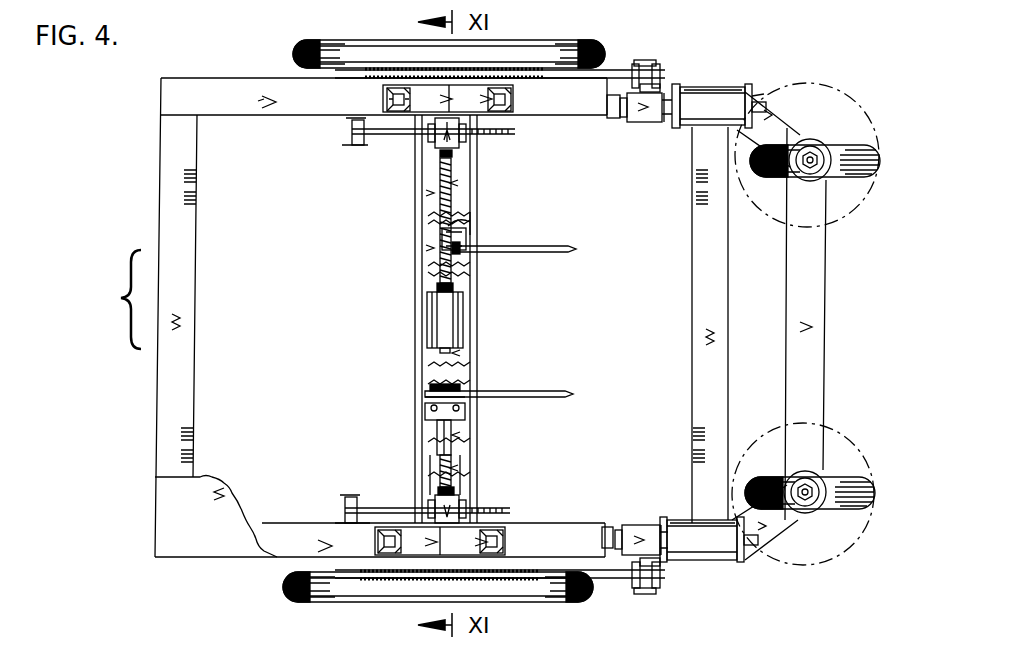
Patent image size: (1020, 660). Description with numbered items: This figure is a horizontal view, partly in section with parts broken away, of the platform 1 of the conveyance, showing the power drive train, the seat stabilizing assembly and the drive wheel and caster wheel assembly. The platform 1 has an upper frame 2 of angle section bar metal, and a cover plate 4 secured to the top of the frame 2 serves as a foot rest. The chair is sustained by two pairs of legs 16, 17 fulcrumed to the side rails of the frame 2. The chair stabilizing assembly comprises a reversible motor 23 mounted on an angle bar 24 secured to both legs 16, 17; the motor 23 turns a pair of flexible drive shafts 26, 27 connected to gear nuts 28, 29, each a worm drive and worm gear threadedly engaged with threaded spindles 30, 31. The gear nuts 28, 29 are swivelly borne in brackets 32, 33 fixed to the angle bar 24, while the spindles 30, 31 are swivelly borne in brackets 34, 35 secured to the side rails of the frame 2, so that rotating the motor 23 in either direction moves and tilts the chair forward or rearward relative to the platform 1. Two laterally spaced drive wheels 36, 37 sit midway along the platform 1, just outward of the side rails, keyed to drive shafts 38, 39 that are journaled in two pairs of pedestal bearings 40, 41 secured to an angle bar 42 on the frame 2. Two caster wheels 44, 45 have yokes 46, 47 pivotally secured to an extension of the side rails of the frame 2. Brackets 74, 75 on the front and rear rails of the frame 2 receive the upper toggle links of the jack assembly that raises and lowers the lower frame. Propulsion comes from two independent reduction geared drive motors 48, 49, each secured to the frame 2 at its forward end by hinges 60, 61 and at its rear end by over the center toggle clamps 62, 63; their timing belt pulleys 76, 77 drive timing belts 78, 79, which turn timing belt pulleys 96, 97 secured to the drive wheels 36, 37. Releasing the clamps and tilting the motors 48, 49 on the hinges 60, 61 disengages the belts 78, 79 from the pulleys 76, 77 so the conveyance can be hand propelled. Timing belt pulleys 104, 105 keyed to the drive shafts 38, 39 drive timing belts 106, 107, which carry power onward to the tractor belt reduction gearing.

The platform 1 is at (120, 299).
The upper frame 2 is at (162, 404).
The cover plate 4 is at (168, 512).
The chair sustaining leg 16 is at (474, 532).
The chair sustaining leg 17 is at (486, 115).
The reversible motor 23 is at (436, 324).
The angle bar 24 is at (428, 455).
The flexible drive shaft 26 is at (428, 468).
The flexible drive shaft 27 is at (440, 189).
The gear nut 28 is at (456, 492).
The gear nut 29 is at (466, 148).
The threaded spindle 30 is at (504, 509).
The threaded spindle 31 is at (514, 132).
The bracket 32 is at (418, 500).
The bracket 33 is at (440, 153).
The bracket 34 is at (344, 497).
The bracket 35 is at (352, 138).
The drive wheel 36 is at (284, 585).
The drive wheel 37 is at (284, 50).
The drive shaft 38 is at (454, 438).
The drive shaft 39 is at (460, 254).
The pedestal bearings 40 is at (466, 414).
The pedestal bearings 41 is at (474, 238).
The angle bar 42 is at (415, 218).
The caster wheel 44 is at (830, 504).
The caster wheel 45 is at (832, 167).
The yoke 46 is at (832, 524).
The yoke 47 is at (832, 181).
The reduction geared drive motor 48 is at (698, 564).
The reduction geared drive motor 49 is at (714, 100).
The hinge 60 is at (606, 536).
The hinge 61 is at (628, 122).
The over the center toggle clamp 62 is at (752, 548).
The over the center toggle clamp 63 is at (758, 96).
The bracket 74 is at (196, 436).
The bracket 75 is at (200, 180).
The timing belt pulley 76 is at (644, 584).
The timing belt pulley 77 is at (652, 65).
The timing belt 78 is at (616, 580).
The timing belt 79 is at (622, 67).
The timing belt pulley 96 is at (534, 557).
The timing belt pulley 97 is at (410, 88).
The timing belt pulley 104 is at (464, 384).
The timing belt pulley 105 is at (460, 238).
The timing belt 106 is at (538, 393).
The timing belt 107 is at (538, 248).